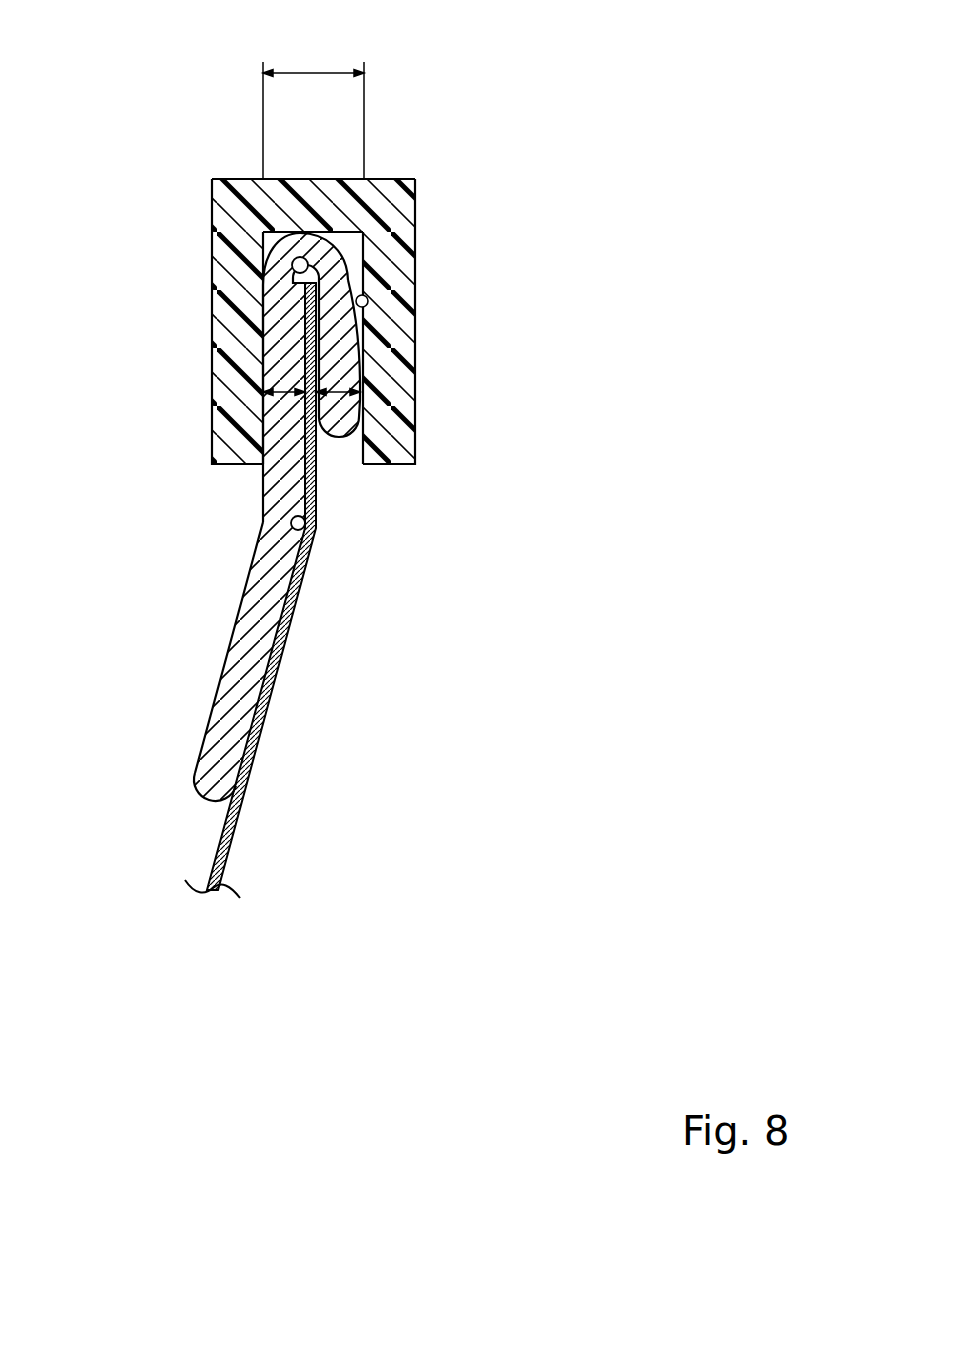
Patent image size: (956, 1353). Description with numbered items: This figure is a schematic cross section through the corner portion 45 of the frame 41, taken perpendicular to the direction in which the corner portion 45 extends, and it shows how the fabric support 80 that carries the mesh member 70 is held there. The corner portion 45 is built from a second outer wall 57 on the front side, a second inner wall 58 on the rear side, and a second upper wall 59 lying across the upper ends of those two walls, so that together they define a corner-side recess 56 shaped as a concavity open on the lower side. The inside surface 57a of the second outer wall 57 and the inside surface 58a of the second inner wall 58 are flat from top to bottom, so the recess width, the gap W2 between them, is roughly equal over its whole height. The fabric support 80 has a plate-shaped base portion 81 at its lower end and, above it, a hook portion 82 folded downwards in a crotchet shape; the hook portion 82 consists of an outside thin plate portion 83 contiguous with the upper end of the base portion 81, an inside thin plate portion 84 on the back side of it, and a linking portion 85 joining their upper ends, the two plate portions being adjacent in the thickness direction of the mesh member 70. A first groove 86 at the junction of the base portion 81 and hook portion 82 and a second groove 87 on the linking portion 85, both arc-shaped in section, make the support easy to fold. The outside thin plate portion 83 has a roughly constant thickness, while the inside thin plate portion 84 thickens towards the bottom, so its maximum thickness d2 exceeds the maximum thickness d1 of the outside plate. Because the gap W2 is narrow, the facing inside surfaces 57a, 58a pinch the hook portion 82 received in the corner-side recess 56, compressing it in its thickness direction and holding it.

The connector housing (terminal holding member 43) 41 is at (313, 279).
The corner portion 45 is at (313, 315).
The corner-side recess 56 is at (337, 458).
The second outer wall 57 is at (222, 338).
The inside surface of the second outer wall 57a is at (263, 392).
The second inner wall 58 is at (407, 263).
The inside surface of the second inner wall 58a is at (365, 317).
The second upper wall 59 is at (335, 185).
The mesh member 70 is at (266, 717).
The fabric support 80 is at (186, 754).
The base portion 81 is at (237, 658).
The hook portion 82 is at (299, 456).
The outside thin plate portion 83 is at (285, 485).
The inside thin plate portion 84 is at (345, 363).
The linking portion 85 is at (303, 233).
The first groove 86 is at (300, 535).
The second groove 87 is at (292, 267).
The gap W2 is at (313, 110).
The maximum thickness d1 is at (288, 398).
The maximum thickness d2 is at (340, 397).